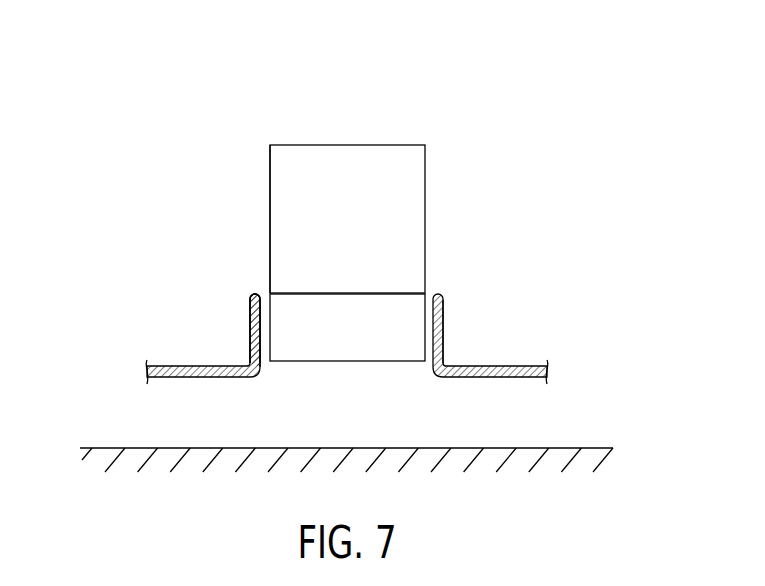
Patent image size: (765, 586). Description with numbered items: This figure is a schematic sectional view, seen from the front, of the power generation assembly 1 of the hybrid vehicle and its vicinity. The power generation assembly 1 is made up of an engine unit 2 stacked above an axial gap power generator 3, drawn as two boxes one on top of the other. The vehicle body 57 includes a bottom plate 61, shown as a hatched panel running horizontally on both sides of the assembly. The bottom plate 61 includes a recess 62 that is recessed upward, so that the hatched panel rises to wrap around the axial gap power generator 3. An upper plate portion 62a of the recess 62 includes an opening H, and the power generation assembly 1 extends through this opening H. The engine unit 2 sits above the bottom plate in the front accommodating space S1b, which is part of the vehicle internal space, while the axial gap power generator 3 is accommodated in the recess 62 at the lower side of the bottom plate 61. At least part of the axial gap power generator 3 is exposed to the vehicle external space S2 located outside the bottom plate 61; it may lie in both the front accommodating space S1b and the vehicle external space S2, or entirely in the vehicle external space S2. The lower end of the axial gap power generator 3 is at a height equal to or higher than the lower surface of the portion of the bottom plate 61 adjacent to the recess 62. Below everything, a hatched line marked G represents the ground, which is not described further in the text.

The power generation assembly 1 is at (390, 138).
The engine unit 2 is at (270, 183).
The axial gap power generator 3 is at (306, 363).
The vehicle body 57 is at (337, 313).
The bottom plate 61 is at (208, 378).
The recess 62 is at (432, 345).
The upper plate portion 62a is at (430, 292).
The opening H is at (266, 294).
The ground G is at (115, 447).
The front accommodating space S1b is at (538, 265).
The vehicle external space S2 is at (497, 425).